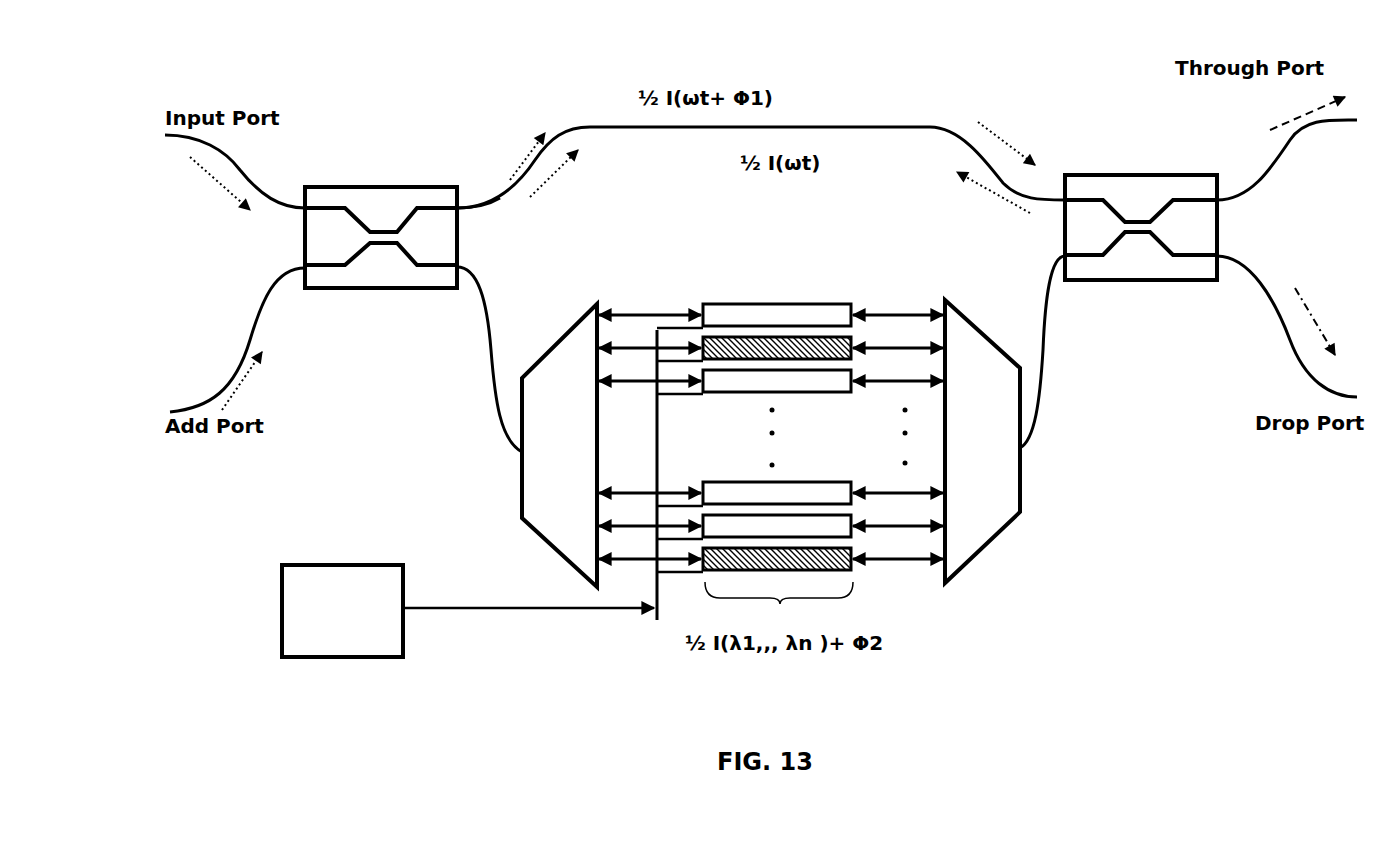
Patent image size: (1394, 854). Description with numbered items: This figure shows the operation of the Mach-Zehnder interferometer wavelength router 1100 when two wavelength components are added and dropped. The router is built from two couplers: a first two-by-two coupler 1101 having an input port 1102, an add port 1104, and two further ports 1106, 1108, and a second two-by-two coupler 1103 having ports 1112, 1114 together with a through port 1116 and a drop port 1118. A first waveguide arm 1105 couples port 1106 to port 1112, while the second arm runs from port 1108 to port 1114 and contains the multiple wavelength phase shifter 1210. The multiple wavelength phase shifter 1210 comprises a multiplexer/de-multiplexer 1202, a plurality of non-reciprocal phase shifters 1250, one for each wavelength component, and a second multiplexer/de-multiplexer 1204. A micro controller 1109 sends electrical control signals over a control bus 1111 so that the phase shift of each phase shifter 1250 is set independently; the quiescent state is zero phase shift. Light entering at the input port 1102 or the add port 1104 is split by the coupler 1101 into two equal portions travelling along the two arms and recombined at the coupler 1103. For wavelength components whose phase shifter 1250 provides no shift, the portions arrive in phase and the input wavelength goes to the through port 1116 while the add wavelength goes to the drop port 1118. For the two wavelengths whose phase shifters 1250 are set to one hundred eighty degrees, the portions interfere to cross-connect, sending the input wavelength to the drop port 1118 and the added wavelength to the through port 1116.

The Mach-Zehnder interferometer wavelength router 1100 is at (360, 537).
The first 2×2 coupler 1101 is at (363, 283).
The input port 1102 is at (303, 208).
The second 2×2 coupler 1103 is at (1137, 255).
The add port 1104 is at (303, 265).
The first waveguide arm 1105 is at (613, 127).
The port 1106 is at (460, 210).
The port 1108 is at (460, 266).
The micro controller 1109 is at (380, 622).
The control bus 1111 is at (648, 612).
The port 1112 is at (1062, 200).
The port 1114 is at (1063, 256).
The through port 1116 is at (1219, 201).
The drop port 1118 is at (1219, 256).
The multiplexer/de-multiplexer 1202 is at (558, 530).
The second multiplexer/de-multiplexer 1204 is at (985, 523).
The multiple wavelength phase shifter 1210 is at (1068, 601).
The non-reciprocal phase shifters 1250 is at (778, 466).